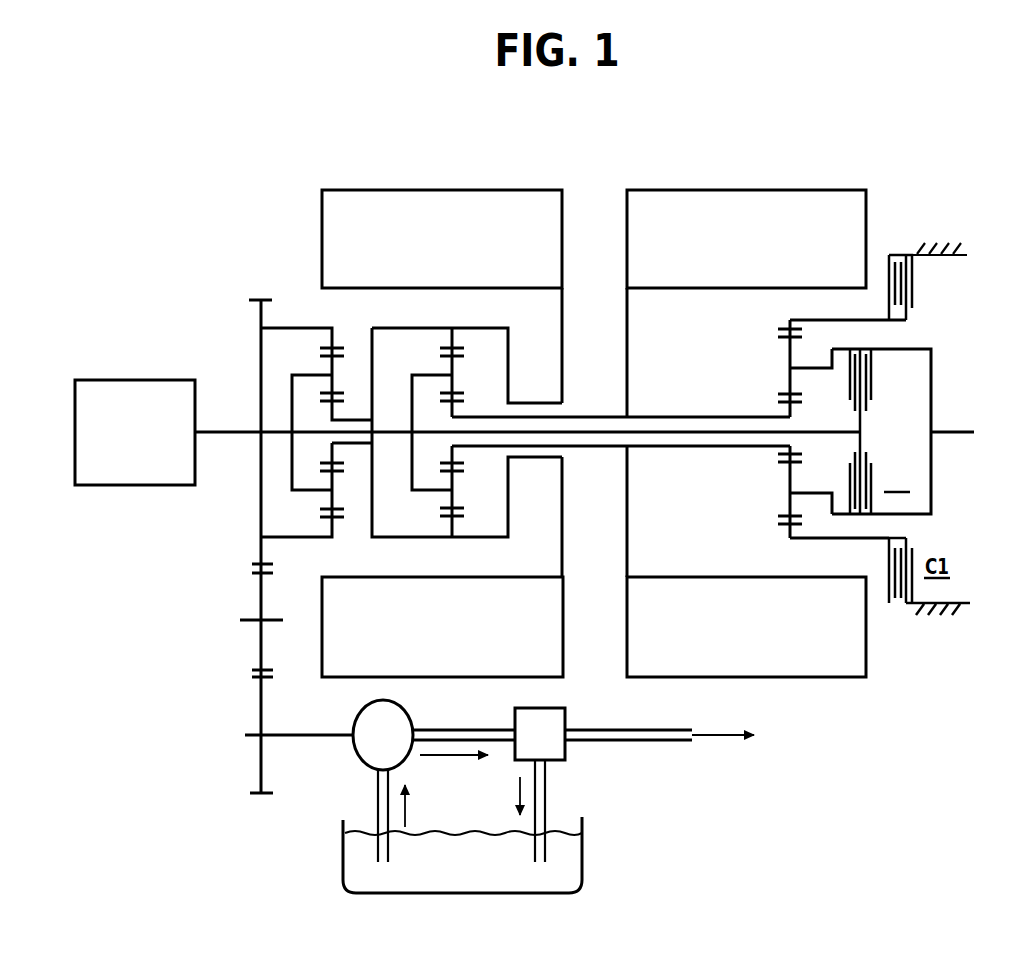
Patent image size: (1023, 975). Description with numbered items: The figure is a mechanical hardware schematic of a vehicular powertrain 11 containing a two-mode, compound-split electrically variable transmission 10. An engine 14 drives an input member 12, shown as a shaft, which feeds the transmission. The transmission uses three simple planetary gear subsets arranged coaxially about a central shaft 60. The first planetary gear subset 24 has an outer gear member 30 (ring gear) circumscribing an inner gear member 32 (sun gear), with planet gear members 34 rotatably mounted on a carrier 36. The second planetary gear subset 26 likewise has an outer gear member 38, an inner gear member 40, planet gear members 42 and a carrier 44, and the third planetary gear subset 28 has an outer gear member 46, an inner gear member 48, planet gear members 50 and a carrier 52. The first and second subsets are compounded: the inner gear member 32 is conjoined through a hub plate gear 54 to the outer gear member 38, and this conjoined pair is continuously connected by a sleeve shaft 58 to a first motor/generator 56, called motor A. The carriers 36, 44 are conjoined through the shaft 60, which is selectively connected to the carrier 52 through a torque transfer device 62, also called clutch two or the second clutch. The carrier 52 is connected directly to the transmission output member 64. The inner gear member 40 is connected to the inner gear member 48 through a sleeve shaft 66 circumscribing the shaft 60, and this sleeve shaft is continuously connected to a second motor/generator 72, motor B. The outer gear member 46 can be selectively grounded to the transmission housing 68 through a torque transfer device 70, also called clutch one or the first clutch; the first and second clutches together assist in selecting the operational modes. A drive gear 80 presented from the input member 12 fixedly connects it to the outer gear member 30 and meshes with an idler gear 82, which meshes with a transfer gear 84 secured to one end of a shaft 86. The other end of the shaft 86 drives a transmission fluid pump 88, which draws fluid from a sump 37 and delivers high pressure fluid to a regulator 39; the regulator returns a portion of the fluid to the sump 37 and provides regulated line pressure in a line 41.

The electrically variable transmission 10 is at (590, 176).
The vehicular powertrain 11 is at (203, 303).
The input member 12 is at (223, 432).
The engine 14 is at (167, 380).
The first planetary gear subset 24 is at (316, 394).
The second planetary gear subset 26 is at (467, 432).
The third planetary gear subset 28 is at (679, 423).
The outer gear member 30 is at (337, 347).
The inner gear member 32 is at (340, 405).
The planet gear members 34 is at (325, 362).
The carrier 36 is at (290, 467).
The sump 37 is at (582, 860).
The outer gear member 38 is at (448, 350).
The regulator 39 is at (567, 758).
The inner gear member 40 is at (412, 453).
The line 41 is at (685, 742).
The planet gear members 42 is at (455, 387).
The carrier 44 is at (412, 477).
The outer gear member 46 is at (787, 332).
The inner gear member 48 is at (795, 457).
The planet gear members 50 is at (790, 380).
The carrier 52 is at (909, 413).
The hub plate gear 54 is at (373, 362).
The first motor/generator 56 is at (428, 190).
The sleeve shaft 58 is at (538, 403).
The shaft 60 is at (592, 432).
The torque transfer device 62 is at (871, 372).
The transmission output member 64 is at (952, 432).
The sleeve shaft 66 is at (643, 417).
The transmission housing 68 is at (952, 246).
The torque transfer device 70 is at (912, 276).
The second motor/generator 72 is at (792, 190).
The drive gear 80 is at (260, 500).
The idler gear 82 is at (258, 645).
The transfer gear 84 is at (258, 710).
The shaft 86 is at (297, 740).
The transmission fluid pump 88 is at (397, 727).